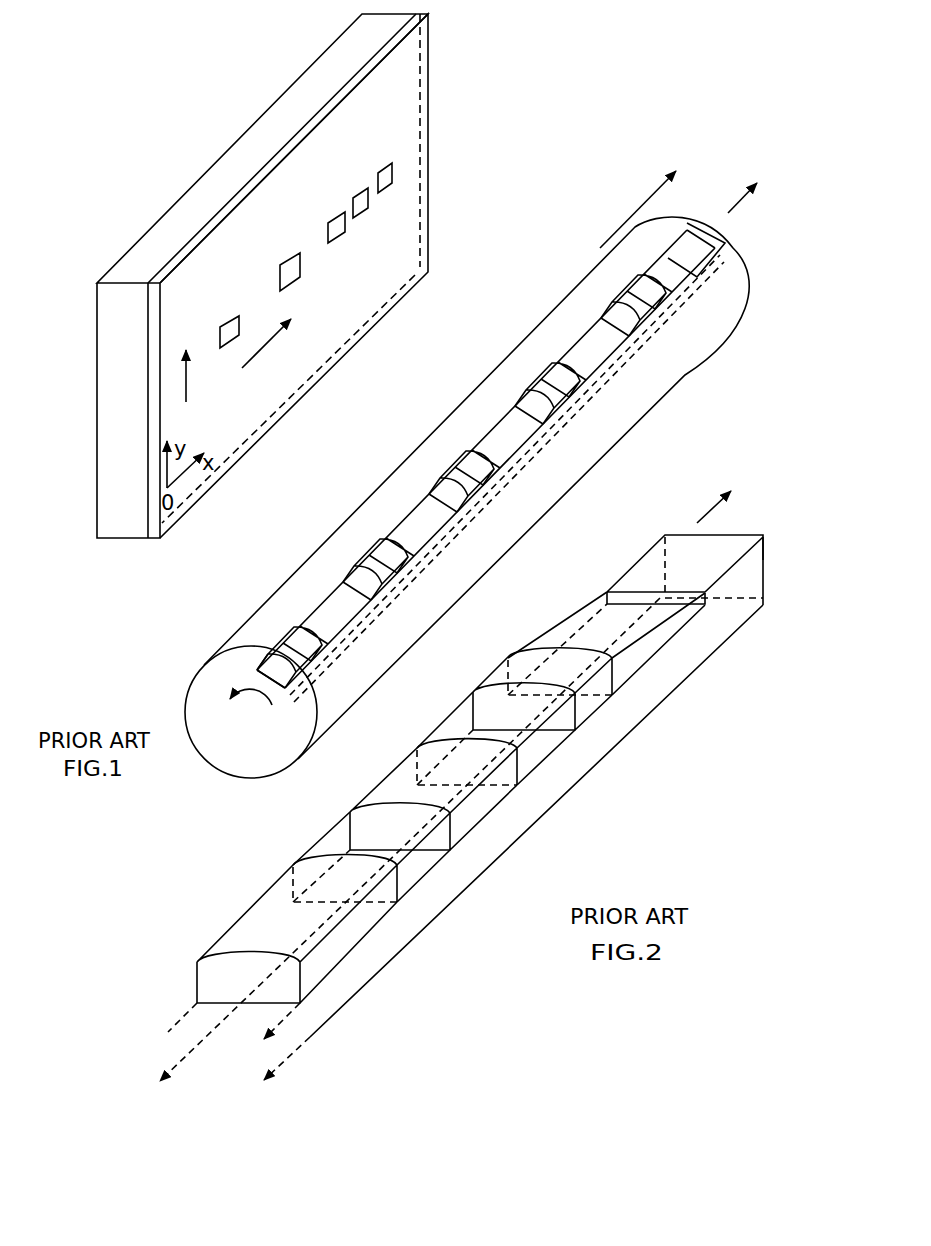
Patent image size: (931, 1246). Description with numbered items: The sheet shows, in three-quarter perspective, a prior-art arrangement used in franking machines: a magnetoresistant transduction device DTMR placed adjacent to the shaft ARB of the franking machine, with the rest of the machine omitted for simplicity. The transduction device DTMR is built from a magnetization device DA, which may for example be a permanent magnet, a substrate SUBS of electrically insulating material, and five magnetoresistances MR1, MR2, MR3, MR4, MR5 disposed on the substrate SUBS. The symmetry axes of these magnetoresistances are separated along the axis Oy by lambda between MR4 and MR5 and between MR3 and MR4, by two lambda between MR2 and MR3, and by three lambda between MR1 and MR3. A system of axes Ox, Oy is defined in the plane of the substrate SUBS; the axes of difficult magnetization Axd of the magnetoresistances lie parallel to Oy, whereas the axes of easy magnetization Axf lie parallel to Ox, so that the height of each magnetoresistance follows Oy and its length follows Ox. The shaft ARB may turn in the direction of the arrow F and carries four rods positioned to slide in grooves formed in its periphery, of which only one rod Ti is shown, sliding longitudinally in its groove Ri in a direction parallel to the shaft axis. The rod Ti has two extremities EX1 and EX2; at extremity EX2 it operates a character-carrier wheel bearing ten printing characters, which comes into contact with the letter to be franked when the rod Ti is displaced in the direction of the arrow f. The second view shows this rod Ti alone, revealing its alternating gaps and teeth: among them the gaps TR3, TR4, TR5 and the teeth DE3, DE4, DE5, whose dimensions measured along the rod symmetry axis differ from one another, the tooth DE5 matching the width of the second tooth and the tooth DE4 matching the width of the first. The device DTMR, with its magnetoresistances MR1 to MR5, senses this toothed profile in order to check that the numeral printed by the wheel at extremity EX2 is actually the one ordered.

In FIG. 1, the magnetoresistant transduction device DTMR is at (126, 551).
In FIG. 1, the magnetization device DA is at (172, 257).
In FIG. 1, the substrate SUBS is at (428, 58).
In FIG. 1, the magnetoresistance MR1 is at (222, 329).
In FIG. 1, the magnetoresistance MR2 is at (284, 267).
In FIG. 1, the magnetoresistance MR3 is at (330, 228).
In FIG. 1, the magnetoresistance MR4 is at (355, 202).
In FIG. 1, the magnetoresistance MR5 is at (381, 172).
In FIG. 1, the axes of difficult magnetization Axd is at (211, 391).
In FIG. 1, the axes of easy magnetization Axf is at (314, 324).
In FIG. 1, the shaft ARB is at (639, 418).
In FIG. 1, the rod Ti is at (698, 238).
In FIG. 2, the rod Ti is at (763, 567).
In FIG. 1, the groove Ri is at (257, 665).
In FIG. 1, the arrow indicating direction of rotation F is at (251, 707).
In FIG. 1, the extremity of the rod EX1 is at (277, 688).
In FIG. 1, the extremity of the rod EX2 is at (761, 188).
In FIG. 2, the extremity of the rod EX2 is at (757, 557).
In FIG. 1, the arrow indicating direction of rod displacement f is at (640, 207).
In FIG. 2, the arrow indicating direction of rod displacement f is at (708, 507).
In FIG. 2, the gap TR3 is at (405, 880).
In FIG. 2, the gap TR4 is at (553, 757).
In FIG. 2, the gap TR5 is at (657, 655).
In FIG. 2, the tooth DE3 is at (337, 948).
In FIG. 2, the tooth DE4 is at (475, 808).
In FIG. 2, the tooth DE5 is at (593, 697).